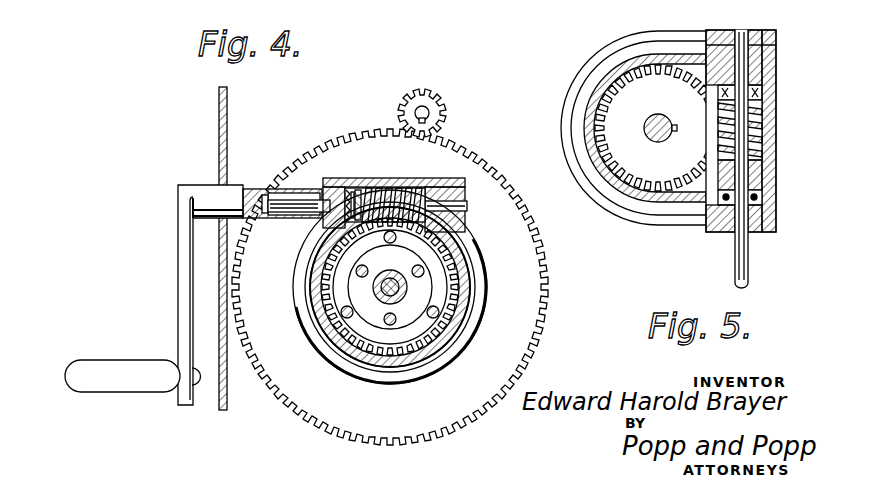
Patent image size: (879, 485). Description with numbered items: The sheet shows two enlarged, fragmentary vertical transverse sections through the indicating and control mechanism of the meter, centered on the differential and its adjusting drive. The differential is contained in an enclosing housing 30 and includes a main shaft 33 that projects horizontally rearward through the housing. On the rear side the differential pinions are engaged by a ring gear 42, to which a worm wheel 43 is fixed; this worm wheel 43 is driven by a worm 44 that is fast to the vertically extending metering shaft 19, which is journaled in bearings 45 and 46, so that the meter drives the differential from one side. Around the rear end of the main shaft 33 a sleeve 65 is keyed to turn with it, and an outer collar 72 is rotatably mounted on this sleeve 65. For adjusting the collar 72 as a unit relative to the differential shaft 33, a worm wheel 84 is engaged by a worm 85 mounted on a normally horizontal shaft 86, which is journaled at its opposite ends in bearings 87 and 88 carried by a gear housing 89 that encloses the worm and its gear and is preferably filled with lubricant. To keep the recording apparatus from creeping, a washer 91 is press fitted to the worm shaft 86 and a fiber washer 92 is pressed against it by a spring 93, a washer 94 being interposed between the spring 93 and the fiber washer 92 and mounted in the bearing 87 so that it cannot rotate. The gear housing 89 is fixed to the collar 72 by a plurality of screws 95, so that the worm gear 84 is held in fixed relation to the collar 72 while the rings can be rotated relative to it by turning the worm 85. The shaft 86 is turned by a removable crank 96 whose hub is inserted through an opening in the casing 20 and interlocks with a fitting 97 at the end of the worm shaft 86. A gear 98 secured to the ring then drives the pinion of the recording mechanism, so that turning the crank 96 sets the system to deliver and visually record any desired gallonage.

In FIG. 5, the metering shaft 19 is at (736, 272).
In FIG. 4, the casing 20 is at (228, 110).
In FIG. 5, the differential housing 30 is at (598, 85).
In FIG. 4, the main shaft 33 is at (373, 291).
In FIG. 5, the main shaft 33 is at (655, 140).
In FIG. 5, the ring gear 42 is at (645, 128).
In FIG. 5, the worm wheel 43 is at (623, 112).
In FIG. 5, the worm 44 is at (764, 128).
In FIG. 5, the bearing 45 is at (760, 35).
In FIG. 5, the bearing 46 is at (776, 228).
In FIG. 4, the sleeve 65 is at (462, 293).
In FIG. 4, the outer collar 72 is at (373, 313).
In FIG. 4, the worm wheel 84 is at (457, 335).
In FIG. 4, the worm 85 is at (425, 180).
In FIG. 4, the worm shaft 86 is at (468, 207).
In FIG. 4, the bearing 87 is at (323, 200).
In FIG. 4, the bearing 88 is at (465, 183).
In FIG. 4, the gear housing 89 is at (425, 368).
In FIG. 4, the washer 91 is at (378, 192).
In FIG. 4, the fiber washer 92 is at (356, 190).
In FIG. 4, the spring 93 is at (346, 190).
In FIG. 4, the washer 94 is at (365, 187).
In FIG. 4, the screws 95 is at (455, 267).
In FIG. 4, the removable crank 96 is at (183, 292).
In FIG. 4, the fitting 97 is at (287, 203).
In FIG. 4, the gear 98 is at (532, 275).